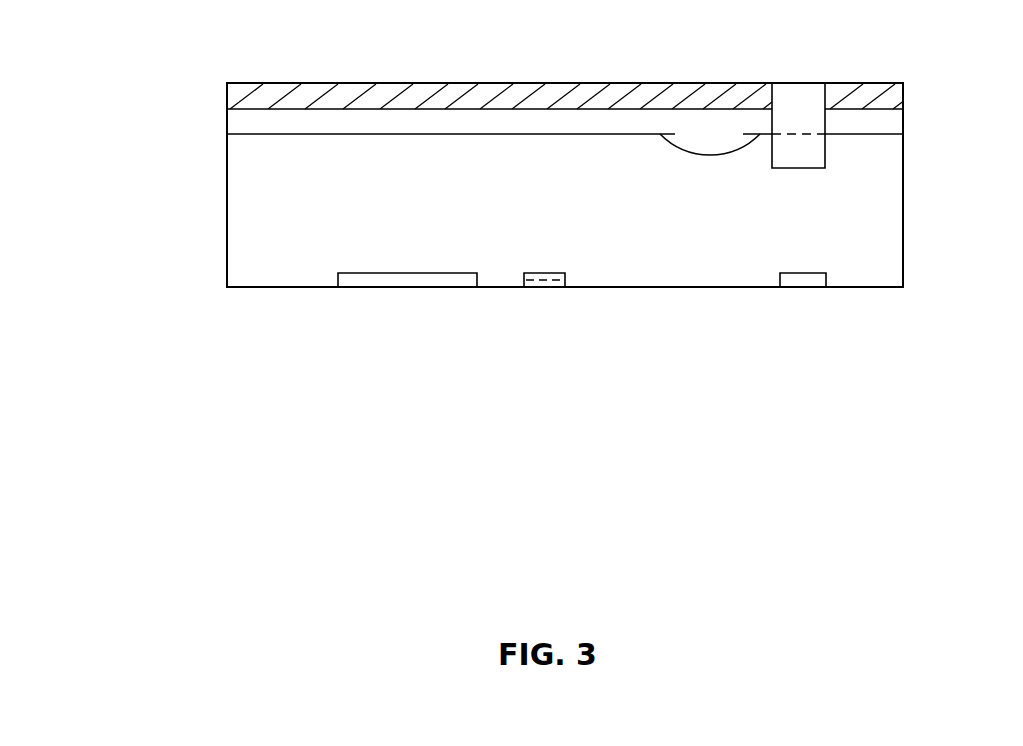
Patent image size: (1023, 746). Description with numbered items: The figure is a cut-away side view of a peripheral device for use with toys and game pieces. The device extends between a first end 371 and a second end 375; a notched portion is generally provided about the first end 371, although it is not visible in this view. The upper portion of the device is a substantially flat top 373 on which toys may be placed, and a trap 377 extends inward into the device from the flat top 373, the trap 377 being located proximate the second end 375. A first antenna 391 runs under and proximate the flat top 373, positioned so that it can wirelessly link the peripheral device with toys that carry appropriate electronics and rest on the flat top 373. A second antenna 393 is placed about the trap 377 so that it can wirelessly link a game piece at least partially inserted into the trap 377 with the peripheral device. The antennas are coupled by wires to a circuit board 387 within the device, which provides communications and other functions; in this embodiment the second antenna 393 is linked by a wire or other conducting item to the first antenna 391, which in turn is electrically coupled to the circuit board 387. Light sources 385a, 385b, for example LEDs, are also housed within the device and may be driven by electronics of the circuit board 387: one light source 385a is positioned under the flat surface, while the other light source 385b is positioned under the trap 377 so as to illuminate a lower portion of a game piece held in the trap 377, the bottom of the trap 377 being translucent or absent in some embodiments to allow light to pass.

The first end 371 is at (226, 162).
The flat top 373 is at (418, 103).
The second end 375 is at (905, 238).
The trap 377 is at (803, 110).
The first antenna 391 is at (500, 134).
The second antenna 393 is at (872, 137).
The circuit board 387 is at (410, 280).
The light source 385a is at (550, 281).
The light source 385b is at (802, 288).